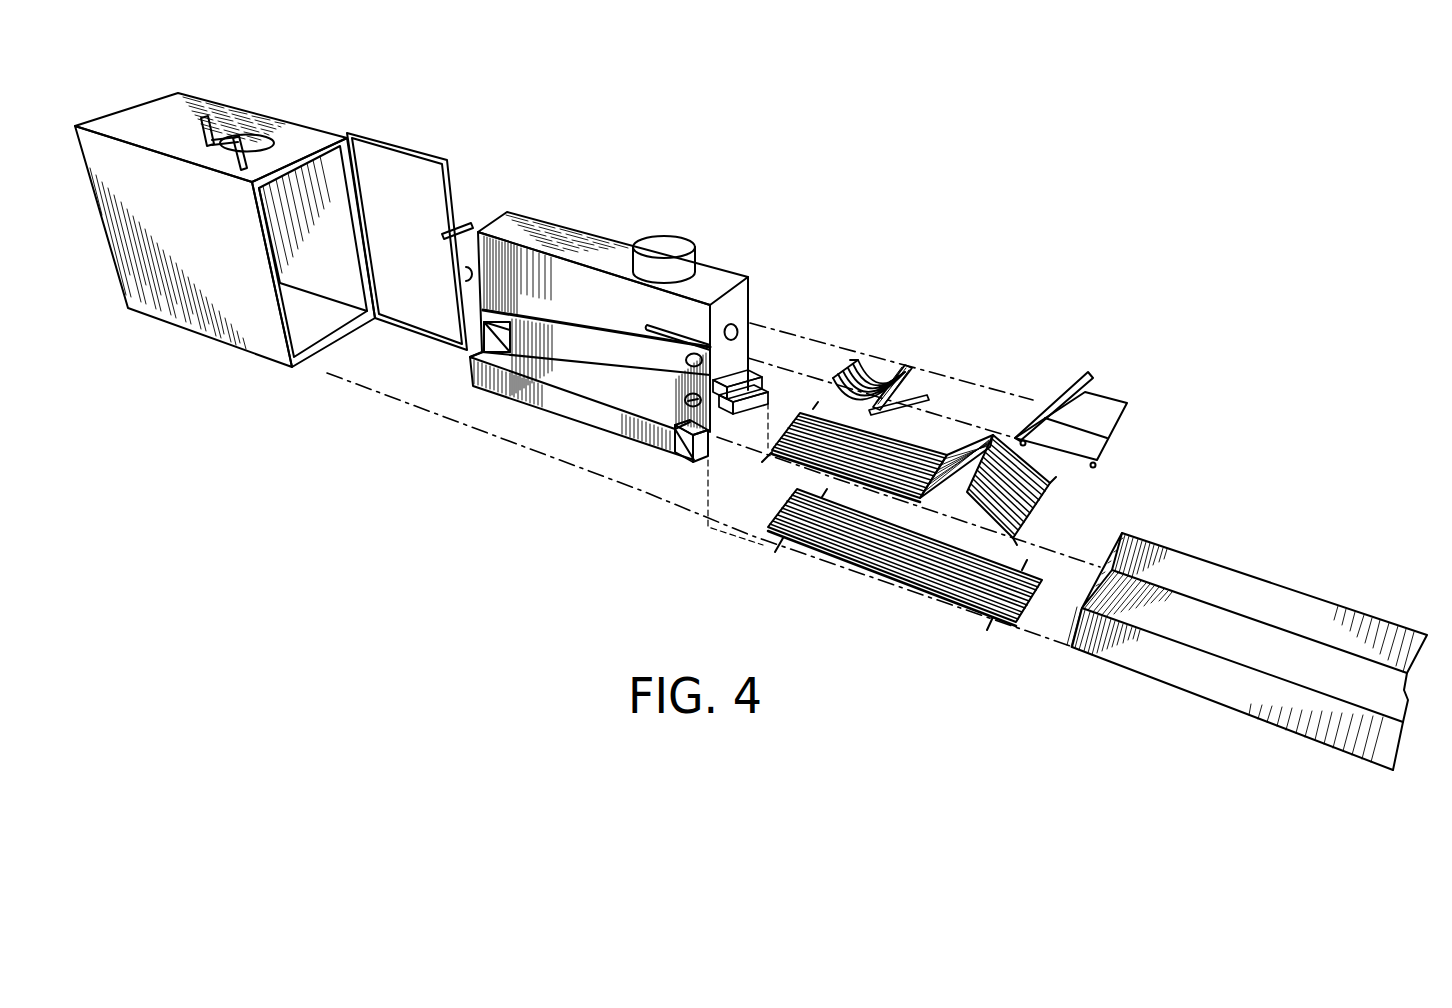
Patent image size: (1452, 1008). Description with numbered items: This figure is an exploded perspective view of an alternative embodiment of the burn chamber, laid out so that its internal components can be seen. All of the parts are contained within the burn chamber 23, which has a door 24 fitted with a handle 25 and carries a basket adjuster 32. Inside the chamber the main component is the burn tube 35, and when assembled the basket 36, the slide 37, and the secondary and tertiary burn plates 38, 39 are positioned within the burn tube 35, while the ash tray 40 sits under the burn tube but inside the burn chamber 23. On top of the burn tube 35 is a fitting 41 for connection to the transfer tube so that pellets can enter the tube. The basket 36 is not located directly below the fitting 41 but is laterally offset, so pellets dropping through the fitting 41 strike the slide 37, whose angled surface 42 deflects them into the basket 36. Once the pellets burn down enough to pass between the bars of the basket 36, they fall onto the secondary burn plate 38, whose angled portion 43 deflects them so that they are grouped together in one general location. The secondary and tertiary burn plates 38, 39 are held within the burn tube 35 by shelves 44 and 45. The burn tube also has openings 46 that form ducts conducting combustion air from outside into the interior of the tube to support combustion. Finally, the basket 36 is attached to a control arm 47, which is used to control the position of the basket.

The burn chamber 23 is at (172, 293).
The door 24 is at (405, 167).
The handle 25 is at (463, 212).
The basket adjuster 32 is at (210, 118).
The burn tube 35 is at (540, 278).
The basket 36 is at (870, 372).
The slide 37 is at (1058, 385).
The secondary burn plate 38 is at (907, 465).
The tertiary burn plate 39 is at (922, 565).
The ash tray 40 is at (1255, 635).
The fitting 41 is at (665, 248).
The angled surface 42 is at (1040, 414).
The angled portion 43 is at (948, 483).
The shelf 44 is at (723, 412).
The shelf 45 is at (690, 427).
The openings 46 is at (482, 340).
The control arm 47 is at (925, 382).